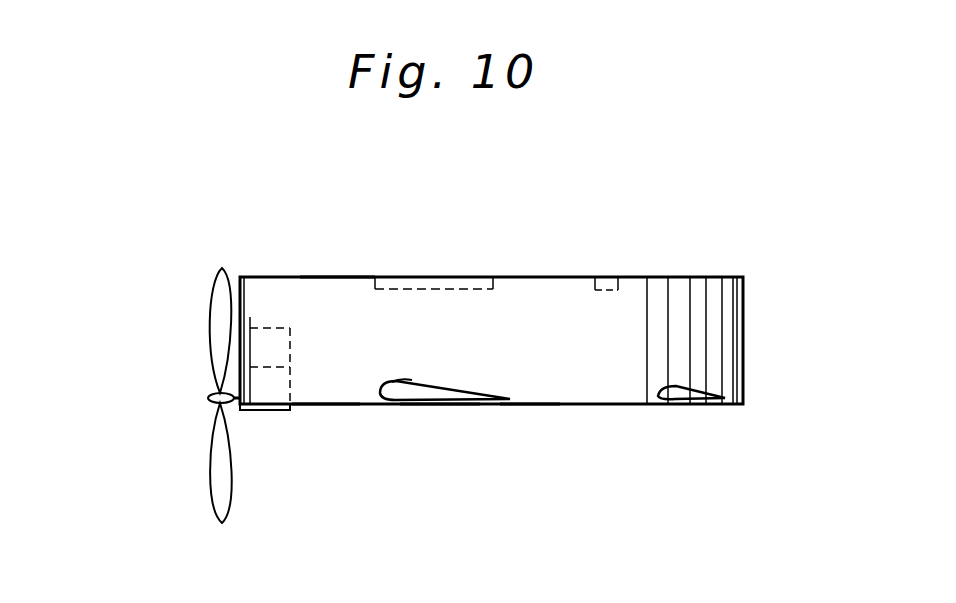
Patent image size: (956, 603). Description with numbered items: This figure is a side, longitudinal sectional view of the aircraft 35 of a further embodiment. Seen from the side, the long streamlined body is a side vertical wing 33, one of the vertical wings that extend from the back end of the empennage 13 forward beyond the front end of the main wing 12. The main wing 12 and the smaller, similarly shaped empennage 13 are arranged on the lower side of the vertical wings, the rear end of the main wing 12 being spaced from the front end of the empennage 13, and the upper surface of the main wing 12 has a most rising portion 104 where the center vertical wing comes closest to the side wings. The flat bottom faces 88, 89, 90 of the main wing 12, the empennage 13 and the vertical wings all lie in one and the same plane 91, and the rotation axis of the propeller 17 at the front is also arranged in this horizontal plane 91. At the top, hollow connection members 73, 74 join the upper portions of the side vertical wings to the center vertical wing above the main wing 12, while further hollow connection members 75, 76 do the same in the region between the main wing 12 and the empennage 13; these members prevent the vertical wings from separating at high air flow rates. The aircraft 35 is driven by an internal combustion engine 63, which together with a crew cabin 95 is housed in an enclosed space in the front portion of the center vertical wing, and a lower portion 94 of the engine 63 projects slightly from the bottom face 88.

The main wing 12 is at (458, 393).
The empennage 13 is at (664, 406).
The propeller 17 is at (213, 296).
The side vertical wing 33 is at (320, 290).
The aircraft 35 is at (546, 184).
The internal combustion engine 63 is at (283, 388).
The hollow connection member 73 is at (445, 240).
The hollow connection member 74 is at (431, 287).
The hollow connection member 75 is at (639, 241).
The hollow connection member 76 is at (605, 287).
The flat bottom face 88 is at (320, 406).
The flat bottom face 89 is at (433, 406).
The flat bottom face 90 is at (690, 406).
The plane 91 is at (523, 421).
The lower portion of the internal combustion engine 94 is at (268, 410).
The crew cabin 95 is at (271, 330).
The most rising portion 104 is at (405, 379).